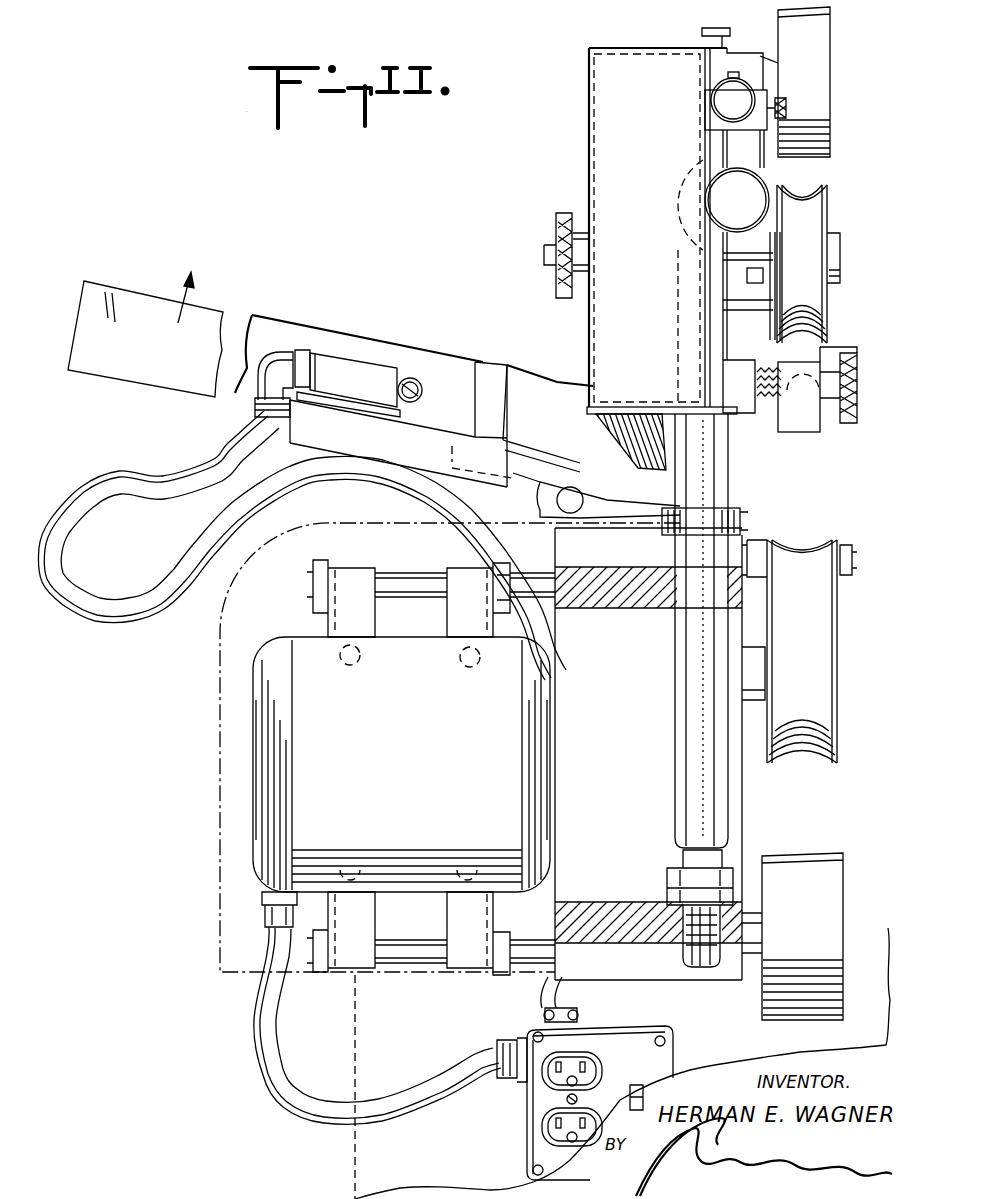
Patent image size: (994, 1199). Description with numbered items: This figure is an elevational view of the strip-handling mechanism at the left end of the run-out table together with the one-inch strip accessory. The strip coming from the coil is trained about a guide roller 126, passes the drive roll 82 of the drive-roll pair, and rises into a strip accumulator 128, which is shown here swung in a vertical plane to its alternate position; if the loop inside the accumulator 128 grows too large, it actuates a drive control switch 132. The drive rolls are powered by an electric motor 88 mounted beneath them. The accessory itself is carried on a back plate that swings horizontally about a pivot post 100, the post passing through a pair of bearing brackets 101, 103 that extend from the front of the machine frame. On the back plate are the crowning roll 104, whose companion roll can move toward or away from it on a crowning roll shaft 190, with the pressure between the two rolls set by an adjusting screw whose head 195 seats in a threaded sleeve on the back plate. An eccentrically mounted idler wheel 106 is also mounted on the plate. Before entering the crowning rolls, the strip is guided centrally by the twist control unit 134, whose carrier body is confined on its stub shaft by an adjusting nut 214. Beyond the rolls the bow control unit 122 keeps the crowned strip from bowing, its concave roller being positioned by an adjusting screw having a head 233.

The drive roll 82 is at (813, 662).
The electric motor 88 is at (418, 737).
The pivot post 100 is at (688, 733).
The bearing bracket 101 is at (612, 598).
The bearing bracket 103 is at (607, 917).
The crowning roll 104 is at (798, 210).
The idler wheel 106 is at (808, 68).
The bow control unit 122 is at (706, 124).
The guide roller 126 is at (838, 836).
The strip accumulator 128 is at (207, 312).
The drive control switch 132 is at (330, 368).
The twist control unit 134 is at (808, 440).
The crowning roll shaft 190 is at (836, 252).
The head 195 is at (716, 207).
The adjusting nut 214 is at (850, 384).
The head 233 is at (722, 98).